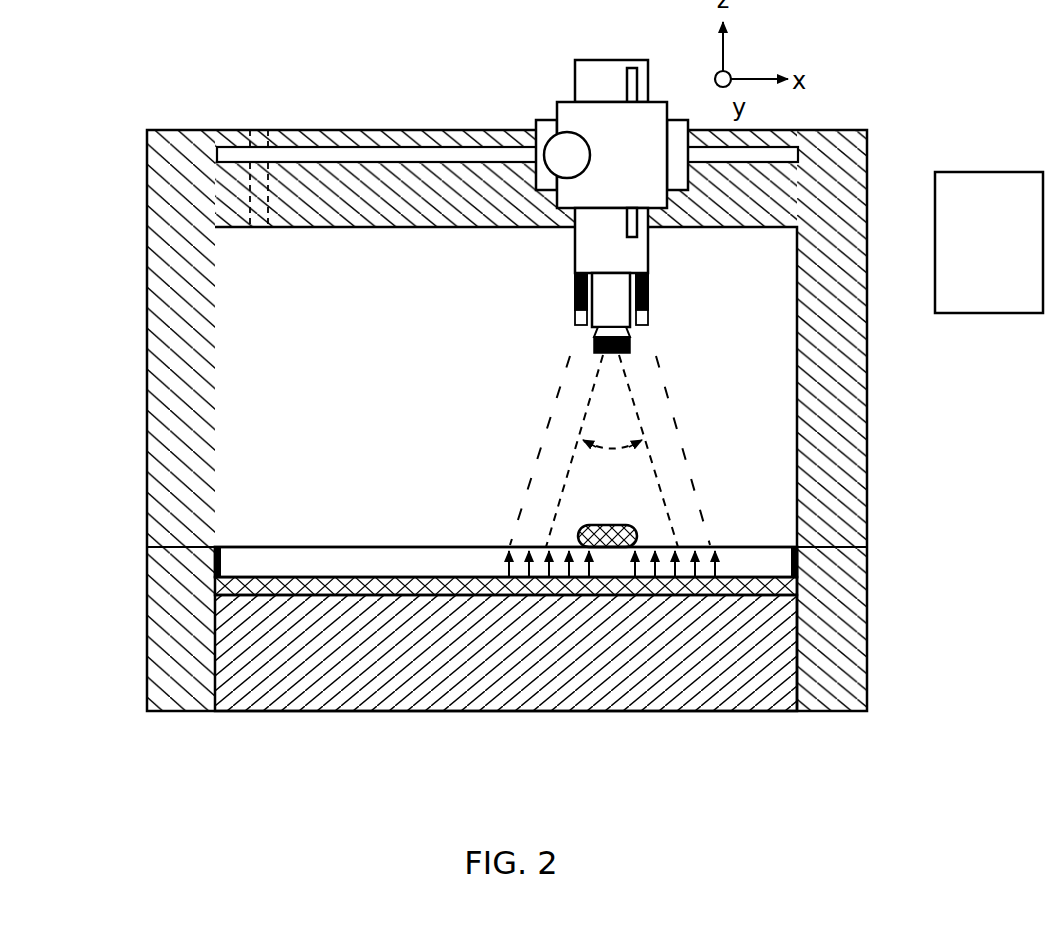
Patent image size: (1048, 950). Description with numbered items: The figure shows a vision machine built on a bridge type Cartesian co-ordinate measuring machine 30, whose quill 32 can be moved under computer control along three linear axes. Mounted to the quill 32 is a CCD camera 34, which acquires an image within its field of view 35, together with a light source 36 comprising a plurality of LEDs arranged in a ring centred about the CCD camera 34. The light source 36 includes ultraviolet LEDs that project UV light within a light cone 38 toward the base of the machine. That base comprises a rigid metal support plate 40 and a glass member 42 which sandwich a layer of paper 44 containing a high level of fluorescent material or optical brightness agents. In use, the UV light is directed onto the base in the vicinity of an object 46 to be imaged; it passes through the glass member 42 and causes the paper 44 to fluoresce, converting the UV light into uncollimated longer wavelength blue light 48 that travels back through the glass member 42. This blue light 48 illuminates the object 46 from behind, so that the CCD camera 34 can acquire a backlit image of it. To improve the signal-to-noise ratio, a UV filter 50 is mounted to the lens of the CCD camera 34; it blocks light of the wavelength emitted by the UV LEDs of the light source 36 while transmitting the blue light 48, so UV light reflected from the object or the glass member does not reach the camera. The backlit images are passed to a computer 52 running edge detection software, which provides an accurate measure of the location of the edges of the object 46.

The co-ordinate measuring machine 30 is at (914, 126).
The quill 32 is at (575, 243).
The CCD camera 34 is at (618, 305).
The light source 36 is at (580, 324).
The field of view 35 is at (646, 425).
The light cone 38 is at (544, 430).
The rigid metal support plate 40 is at (755, 687).
The glass member 42 is at (273, 562).
The layer of paper 44 is at (335, 575).
The object 46 is at (615, 525).
The longer wavelength light 48 is at (508, 572).
The UV filter 50 is at (636, 351).
The computer 52 is at (612, 293).